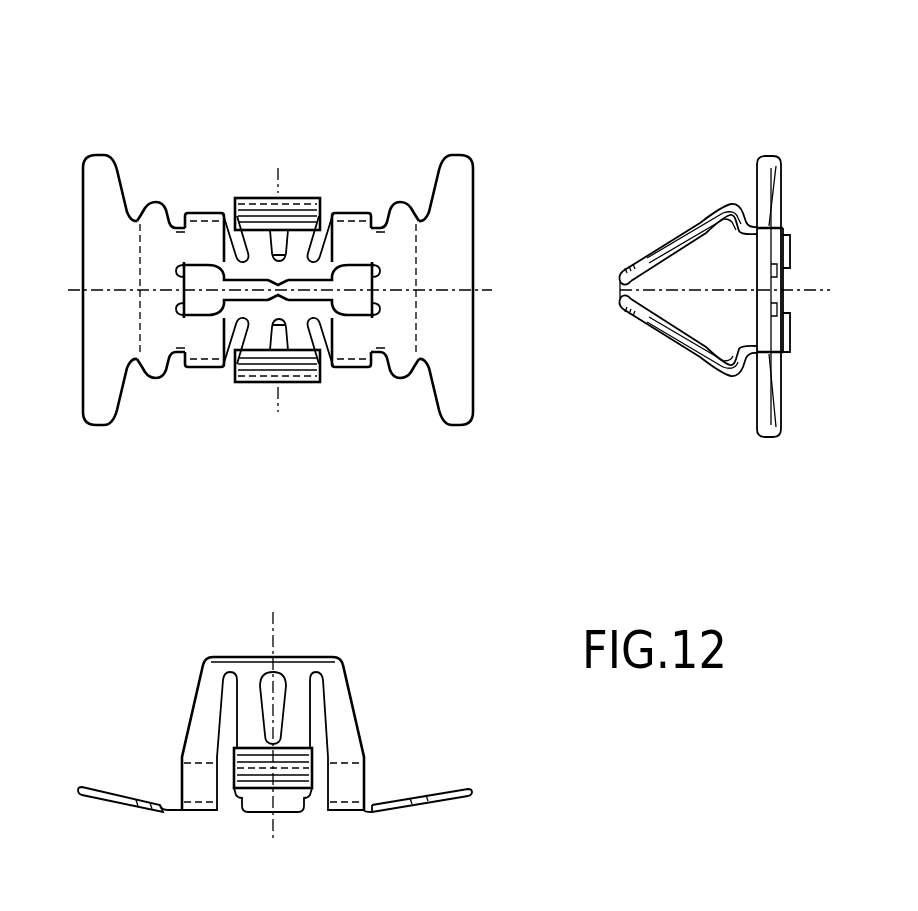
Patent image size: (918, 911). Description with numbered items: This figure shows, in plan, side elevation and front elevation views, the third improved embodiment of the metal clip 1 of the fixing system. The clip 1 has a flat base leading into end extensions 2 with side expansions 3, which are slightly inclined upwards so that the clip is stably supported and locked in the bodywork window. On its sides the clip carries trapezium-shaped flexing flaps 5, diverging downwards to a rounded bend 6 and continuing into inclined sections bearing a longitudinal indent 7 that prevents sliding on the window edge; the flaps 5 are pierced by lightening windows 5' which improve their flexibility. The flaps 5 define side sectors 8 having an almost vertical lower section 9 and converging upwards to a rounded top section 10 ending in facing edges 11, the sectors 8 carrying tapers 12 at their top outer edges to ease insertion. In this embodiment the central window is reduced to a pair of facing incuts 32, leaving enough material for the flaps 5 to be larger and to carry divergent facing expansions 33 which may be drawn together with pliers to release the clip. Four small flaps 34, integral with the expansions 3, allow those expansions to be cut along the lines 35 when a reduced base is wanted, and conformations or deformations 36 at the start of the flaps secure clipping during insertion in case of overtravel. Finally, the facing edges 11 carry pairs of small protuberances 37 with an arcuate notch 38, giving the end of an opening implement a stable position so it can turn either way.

The metal clip 1 is at (436, 117).
The end extensions 2 is at (97, 347).
The side expansions 3 is at (98, 168).
The flexing flaps 5 is at (416, 373).
The lightening windows 5' is at (301, 662).
The rounded bend 6 is at (727, 201).
The longitudinal indent 7 is at (742, 198).
The sectors 8 is at (199, 272).
The lower section 9 is at (196, 787).
The top section 10 is at (628, 262).
The facing edges 11 is at (622, 300).
The tapers 12 is at (212, 302).
The facing incuts 32 is at (191, 226).
The expansions 33 is at (290, 215).
The small flaps 34 is at (155, 213).
The cutting lines 35 is at (138, 268).
The conformations or deformations 36 is at (185, 243).
The small protuberances 37 is at (283, 283).
The arcuate notch 38 is at (305, 383).